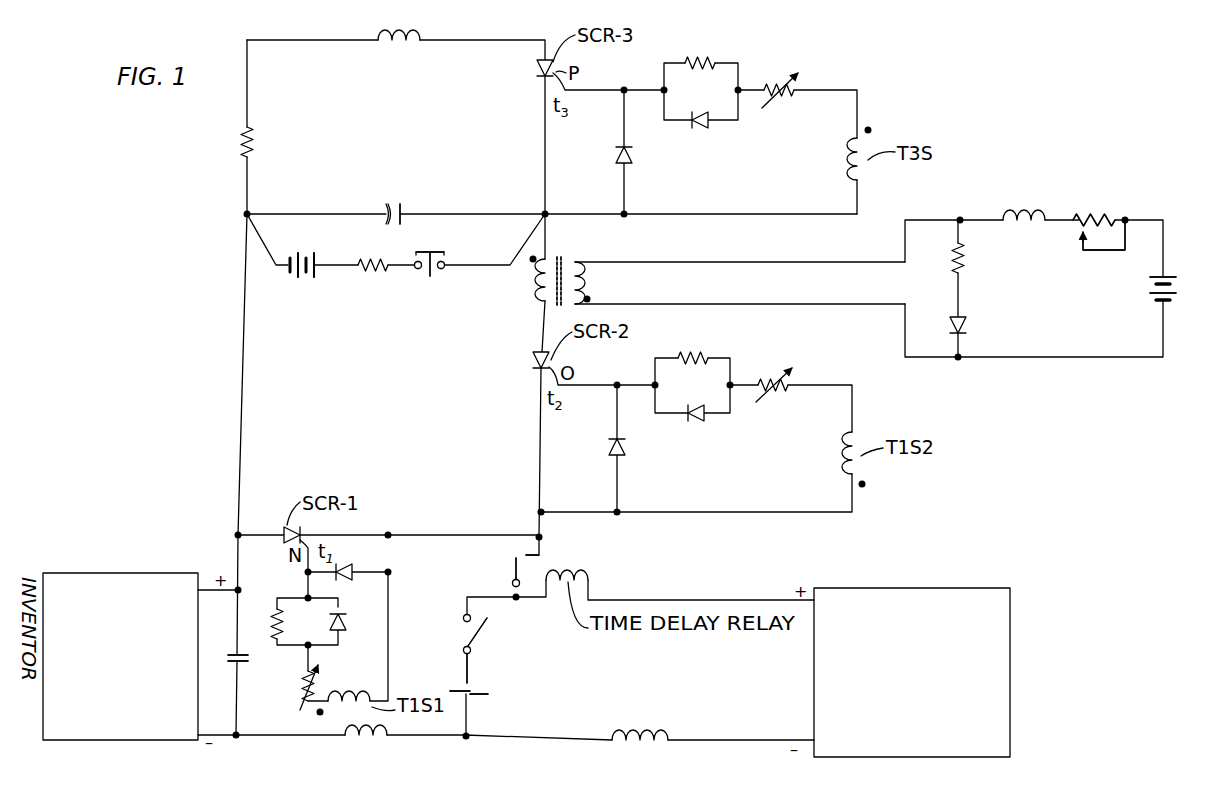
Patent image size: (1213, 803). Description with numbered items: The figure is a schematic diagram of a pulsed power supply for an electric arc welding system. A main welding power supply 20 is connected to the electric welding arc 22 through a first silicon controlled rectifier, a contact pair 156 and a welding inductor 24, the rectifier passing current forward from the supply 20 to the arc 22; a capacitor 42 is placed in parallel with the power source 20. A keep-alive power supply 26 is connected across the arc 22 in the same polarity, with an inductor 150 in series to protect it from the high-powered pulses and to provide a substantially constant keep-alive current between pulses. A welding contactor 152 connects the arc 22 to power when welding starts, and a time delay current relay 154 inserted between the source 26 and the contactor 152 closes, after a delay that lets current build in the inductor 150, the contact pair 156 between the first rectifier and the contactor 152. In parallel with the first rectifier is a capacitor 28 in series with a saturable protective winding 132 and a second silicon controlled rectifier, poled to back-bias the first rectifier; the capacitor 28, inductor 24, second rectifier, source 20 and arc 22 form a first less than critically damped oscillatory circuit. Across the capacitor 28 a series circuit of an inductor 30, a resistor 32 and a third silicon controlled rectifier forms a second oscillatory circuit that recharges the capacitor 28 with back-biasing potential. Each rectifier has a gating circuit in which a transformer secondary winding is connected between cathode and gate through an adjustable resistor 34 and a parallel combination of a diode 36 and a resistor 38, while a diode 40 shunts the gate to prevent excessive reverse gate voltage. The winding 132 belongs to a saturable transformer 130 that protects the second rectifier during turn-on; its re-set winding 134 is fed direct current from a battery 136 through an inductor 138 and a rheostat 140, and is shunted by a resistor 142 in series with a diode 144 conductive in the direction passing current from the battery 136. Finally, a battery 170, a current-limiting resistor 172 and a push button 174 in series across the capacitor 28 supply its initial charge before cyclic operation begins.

The main welding power supply 20 is at (118, 577).
The electric welding arc 22 is at (460, 688).
The welding inductor 24 is at (382, 745).
The keep-alive power supply 26 is at (1012, 637).
The capacitor 28 is at (392, 200).
The inductor 30 is at (395, 48).
The resistor 32 is at (243, 140).
The adjustable resistor 34 is at (283, 678).
The diode 36 is at (700, 128).
The resistor 38 is at (708, 57).
The diode 40 is at (633, 152).
The capacitor 42 is at (248, 660).
The saturable transformer 130 is at (565, 298).
The protective winding 132 is at (533, 284).
The re-set winding 134 is at (581, 282).
The battery 136 is at (1178, 297).
The inductor 138 is at (1025, 210).
The rheostat 140 is at (1105, 210).
The resistor 142 is at (966, 262).
The diode 144 is at (964, 328).
The inductor 150 is at (630, 728).
The welding contactor 152 is at (478, 637).
The time delay current relay 154 is at (590, 568).
The contact pair 156 is at (514, 556).
The battery 170 is at (298, 278).
The current-limiting resistor 172 is at (372, 276).
The push button 174 is at (432, 278).